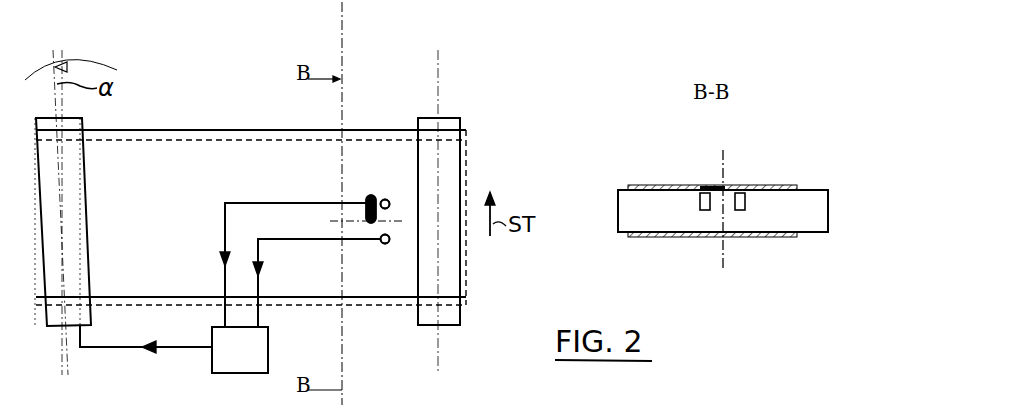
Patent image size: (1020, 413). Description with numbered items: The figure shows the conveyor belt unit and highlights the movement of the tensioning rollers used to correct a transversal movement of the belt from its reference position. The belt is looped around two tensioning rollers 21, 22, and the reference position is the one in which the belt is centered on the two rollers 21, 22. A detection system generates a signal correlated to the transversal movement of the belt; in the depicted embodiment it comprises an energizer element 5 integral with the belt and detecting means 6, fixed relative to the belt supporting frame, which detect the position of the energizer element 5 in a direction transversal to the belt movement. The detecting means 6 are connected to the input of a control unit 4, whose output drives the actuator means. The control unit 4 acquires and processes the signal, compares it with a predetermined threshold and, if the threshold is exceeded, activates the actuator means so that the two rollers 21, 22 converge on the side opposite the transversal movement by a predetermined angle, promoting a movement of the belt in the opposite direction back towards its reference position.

The tensioning roller 21 is at (75, 118).
The tensioning roller 22 is at (450, 122).
The control unit 4 is at (249, 365).
The energizer element 5 is at (375, 196).
The detecting means 6 is at (393, 197).